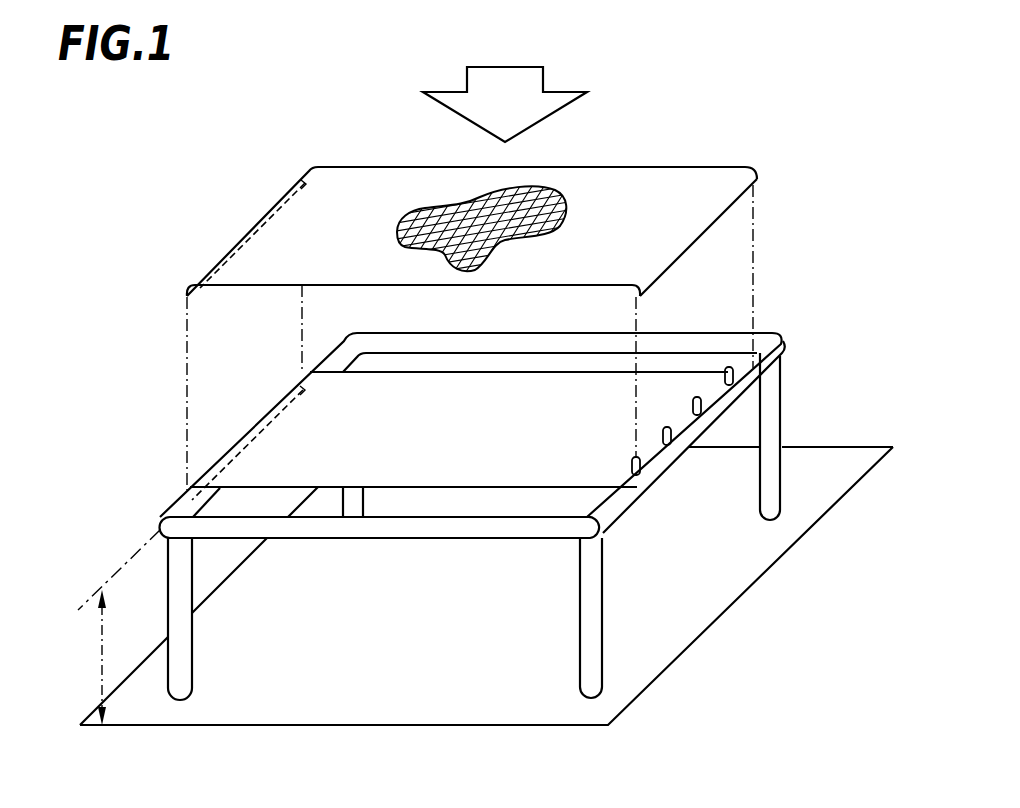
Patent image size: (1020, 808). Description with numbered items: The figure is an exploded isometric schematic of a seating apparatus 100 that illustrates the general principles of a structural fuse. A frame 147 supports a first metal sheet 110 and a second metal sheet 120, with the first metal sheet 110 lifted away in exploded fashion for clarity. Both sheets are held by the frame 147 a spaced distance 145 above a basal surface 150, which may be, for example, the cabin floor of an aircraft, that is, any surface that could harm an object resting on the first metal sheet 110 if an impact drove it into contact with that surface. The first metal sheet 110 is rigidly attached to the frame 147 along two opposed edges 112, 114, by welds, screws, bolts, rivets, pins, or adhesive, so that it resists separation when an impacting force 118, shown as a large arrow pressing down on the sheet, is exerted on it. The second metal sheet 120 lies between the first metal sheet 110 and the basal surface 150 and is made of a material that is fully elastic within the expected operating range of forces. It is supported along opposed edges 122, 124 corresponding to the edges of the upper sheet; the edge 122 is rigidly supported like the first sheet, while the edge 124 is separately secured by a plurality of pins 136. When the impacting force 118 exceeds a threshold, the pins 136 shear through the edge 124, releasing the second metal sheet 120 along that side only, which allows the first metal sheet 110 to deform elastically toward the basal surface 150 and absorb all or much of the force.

The seating apparatus 100 is at (178, 172).
The first metal sheet 110 is at (610, 267).
The edge 112 is at (195, 292).
The edge 114 is at (740, 203).
The impacting force 118 is at (543, 72).
The second metal sheet 120 is at (515, 430).
The edge 122 is at (290, 407).
The edge 124 is at (703, 418).
The pins 136 is at (703, 405).
The spaced distance 145 is at (100, 647).
The frame 147 is at (373, 539).
The basal surface 150 is at (487, 667).